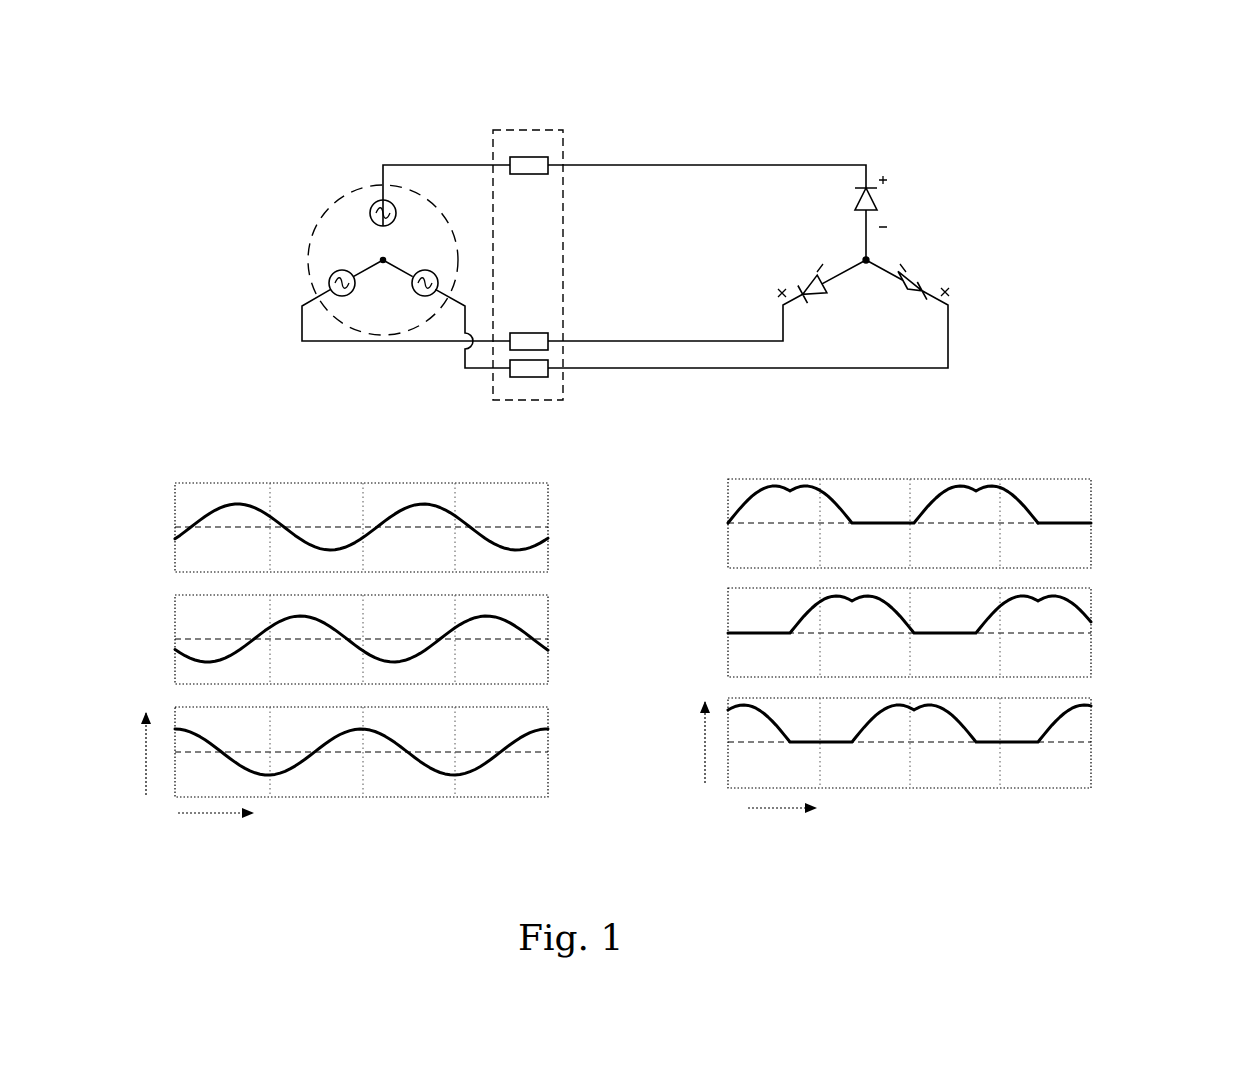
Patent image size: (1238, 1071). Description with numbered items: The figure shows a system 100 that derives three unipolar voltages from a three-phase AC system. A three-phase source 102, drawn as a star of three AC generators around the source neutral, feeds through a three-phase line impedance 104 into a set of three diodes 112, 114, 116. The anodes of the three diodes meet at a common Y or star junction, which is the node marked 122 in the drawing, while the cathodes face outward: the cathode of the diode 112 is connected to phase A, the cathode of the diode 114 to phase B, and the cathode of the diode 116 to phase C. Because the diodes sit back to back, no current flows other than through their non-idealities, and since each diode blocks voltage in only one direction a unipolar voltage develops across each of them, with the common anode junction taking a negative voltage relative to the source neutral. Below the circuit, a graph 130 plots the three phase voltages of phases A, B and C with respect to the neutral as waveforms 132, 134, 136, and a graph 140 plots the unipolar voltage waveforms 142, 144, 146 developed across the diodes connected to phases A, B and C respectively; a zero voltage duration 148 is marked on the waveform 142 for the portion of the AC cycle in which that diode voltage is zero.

The system 100 is at (242, 132).
The three-phase source 102 is at (300, 243).
The three-phase line impedance 104 is at (484, 135).
The diode 112 is at (886, 198).
The diode 114 is at (930, 283).
The diode 116 is at (798, 280).
The DC output node YDC 122 is at (882, 258).
The graph 130 is at (184, 472).
The waveform 132 is at (518, 538).
The waveform 134 is at (523, 619).
The waveform 136 is at (520, 727).
The graph 140 is at (744, 470).
The unipolar voltage waveform 142 is at (1018, 494).
The unipolar voltage waveform 144 is at (1070, 592).
The unipolar voltage waveform 146 is at (1084, 695).
The zero voltage duration 148 is at (1060, 511).